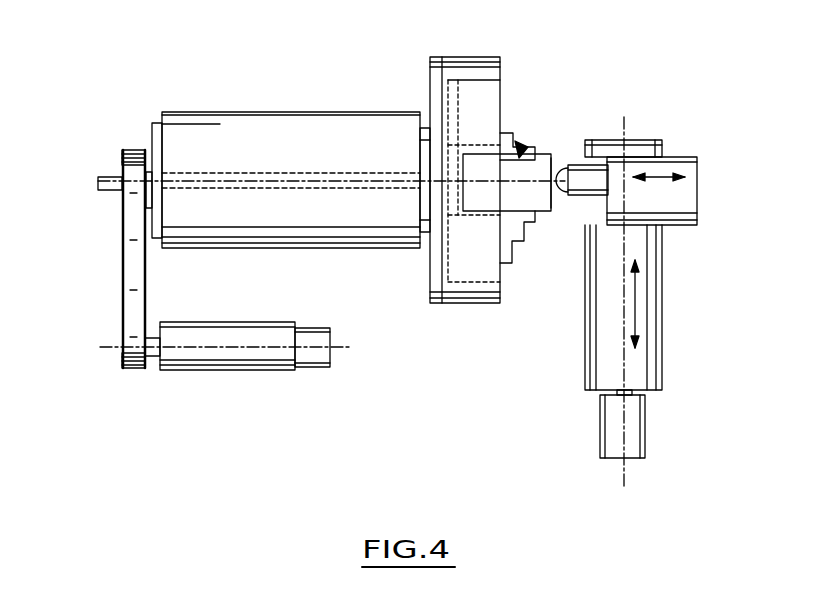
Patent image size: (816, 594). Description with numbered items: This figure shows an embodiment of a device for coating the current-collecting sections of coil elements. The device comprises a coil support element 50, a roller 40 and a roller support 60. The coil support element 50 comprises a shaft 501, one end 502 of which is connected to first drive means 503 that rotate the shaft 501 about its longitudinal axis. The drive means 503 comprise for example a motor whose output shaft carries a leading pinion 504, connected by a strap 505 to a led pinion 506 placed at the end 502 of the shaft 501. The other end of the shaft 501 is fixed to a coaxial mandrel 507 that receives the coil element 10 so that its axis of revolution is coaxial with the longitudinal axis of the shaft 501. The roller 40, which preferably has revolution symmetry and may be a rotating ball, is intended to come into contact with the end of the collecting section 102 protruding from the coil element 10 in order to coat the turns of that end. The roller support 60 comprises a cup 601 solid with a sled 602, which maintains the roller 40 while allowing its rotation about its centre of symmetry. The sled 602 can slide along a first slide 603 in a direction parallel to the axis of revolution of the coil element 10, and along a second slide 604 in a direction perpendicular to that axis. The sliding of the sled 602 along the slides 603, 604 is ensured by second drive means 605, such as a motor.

The coil element 10 is at (492, 197).
The current-collecting section 102 is at (558, 282).
The roller 40 is at (518, 147).
The coil support element 50 is at (287, 106).
The shaft 501 is at (270, 182).
The end 502 is at (102, 183).
The first drive means 503 is at (297, 322).
The leading pinion 504 is at (122, 353).
The strap 505 is at (128, 280).
The led pinion 506 is at (127, 150).
The mandrel 507 is at (467, 63).
The roller support 60 is at (689, 119).
The cup 601 is at (578, 163).
The sled 602 is at (693, 217).
The first slide 603 is at (660, 183).
The second slide 604 is at (597, 372).
The second drive means 605 is at (613, 448).